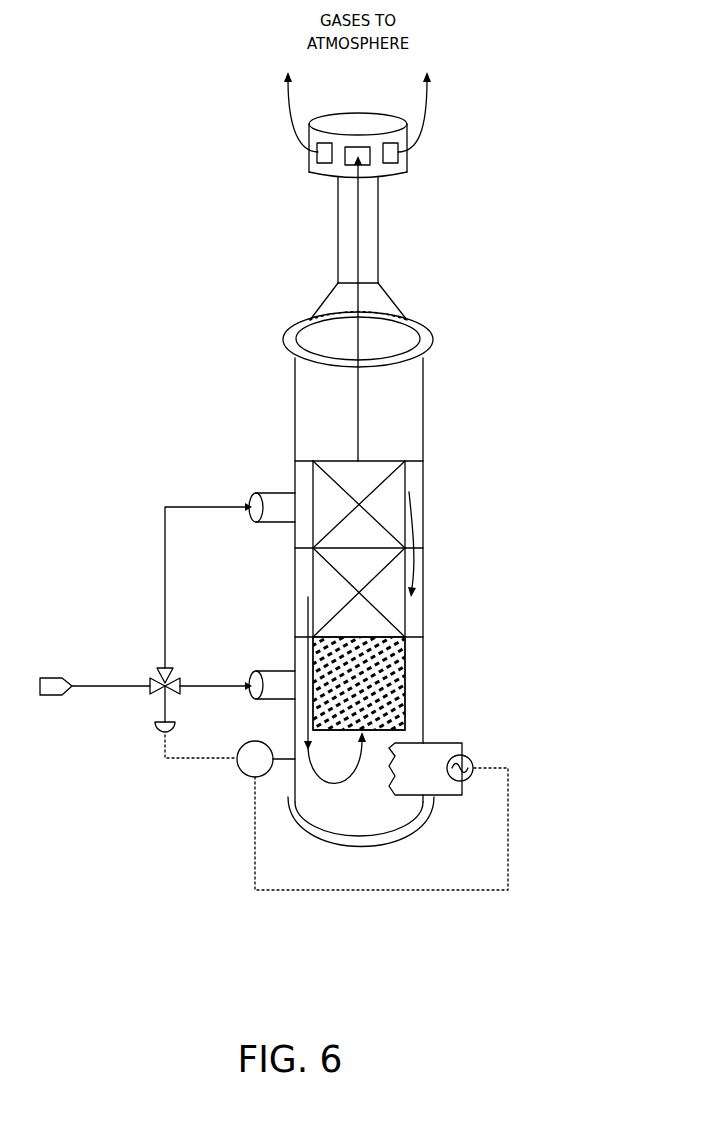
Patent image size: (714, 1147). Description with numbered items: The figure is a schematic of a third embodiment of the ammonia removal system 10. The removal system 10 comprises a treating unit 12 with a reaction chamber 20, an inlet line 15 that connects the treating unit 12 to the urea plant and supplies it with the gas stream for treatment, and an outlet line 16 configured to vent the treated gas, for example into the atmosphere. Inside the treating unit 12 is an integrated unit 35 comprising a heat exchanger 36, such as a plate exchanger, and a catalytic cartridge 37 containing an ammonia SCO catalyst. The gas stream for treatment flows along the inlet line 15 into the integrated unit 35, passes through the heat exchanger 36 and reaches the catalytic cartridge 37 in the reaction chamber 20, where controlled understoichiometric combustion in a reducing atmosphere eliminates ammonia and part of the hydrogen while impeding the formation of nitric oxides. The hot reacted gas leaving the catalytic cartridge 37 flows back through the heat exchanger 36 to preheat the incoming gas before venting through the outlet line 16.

The removal system 10 is at (509, 272).
The treating unit 12 is at (464, 417).
The inlet line 15 is at (107, 680).
The outlet line 16 is at (370, 240).
The reaction chamber 20 is at (413, 661).
The integrated unit 35 is at (307, 422).
The heat exchanger 36 is at (388, 604).
The catalytic cartridge 37 is at (402, 707).